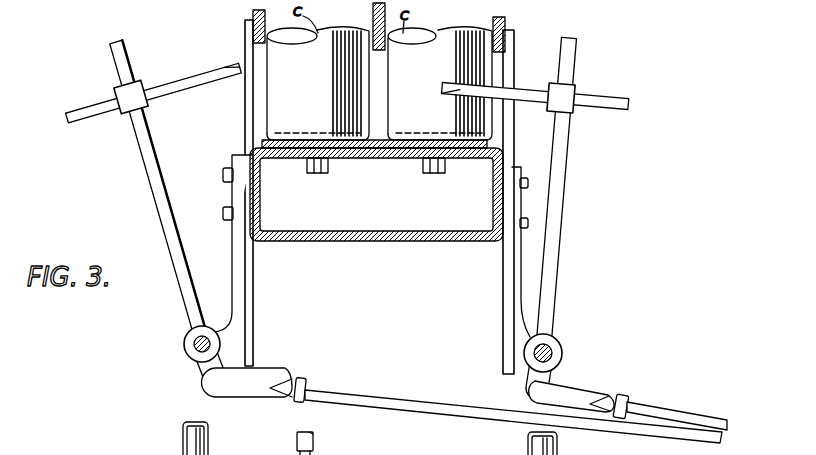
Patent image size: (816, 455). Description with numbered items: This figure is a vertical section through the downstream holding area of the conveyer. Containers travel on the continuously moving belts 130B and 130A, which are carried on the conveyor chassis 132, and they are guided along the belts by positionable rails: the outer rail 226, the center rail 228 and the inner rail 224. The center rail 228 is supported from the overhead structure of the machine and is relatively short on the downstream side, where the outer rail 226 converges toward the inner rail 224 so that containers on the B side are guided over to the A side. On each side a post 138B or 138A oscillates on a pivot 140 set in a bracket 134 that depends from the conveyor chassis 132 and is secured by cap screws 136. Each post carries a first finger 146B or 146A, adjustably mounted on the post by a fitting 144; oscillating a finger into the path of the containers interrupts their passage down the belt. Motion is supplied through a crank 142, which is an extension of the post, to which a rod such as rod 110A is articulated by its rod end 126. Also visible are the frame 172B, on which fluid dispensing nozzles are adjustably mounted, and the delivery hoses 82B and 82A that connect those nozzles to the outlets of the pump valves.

The outer rail 226 is at (254, 13).
The center rail 228 is at (372, 18).
The inner rail 224 is at (507, 21).
The first finger 146B is at (203, 72).
The first finger 146A is at (448, 82).
The fitting 144 is at (123, 112).
The post 138B is at (147, 185).
The post 138A is at (575, 63).
The cap screw 136 is at (527, 182).
The belt 130B is at (318, 175).
The belt 130A is at (432, 175).
The bracket 134 is at (252, 278).
The conveyor chassis 132 is at (335, 245).
The pivot 140 is at (192, 343).
The crank 142 is at (197, 375).
The rod end 126 is at (280, 377).
The rod 110A is at (672, 410).
The frame 172B is at (258, 447).
The delivery hose 82B is at (320, 445).
The delivery hose 82A is at (440, 454).